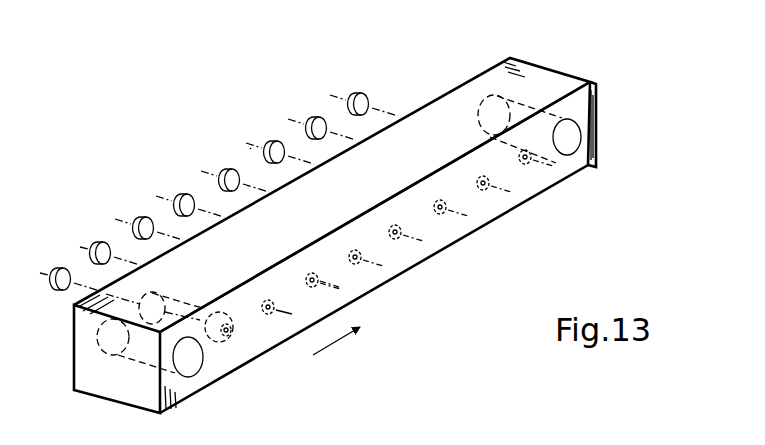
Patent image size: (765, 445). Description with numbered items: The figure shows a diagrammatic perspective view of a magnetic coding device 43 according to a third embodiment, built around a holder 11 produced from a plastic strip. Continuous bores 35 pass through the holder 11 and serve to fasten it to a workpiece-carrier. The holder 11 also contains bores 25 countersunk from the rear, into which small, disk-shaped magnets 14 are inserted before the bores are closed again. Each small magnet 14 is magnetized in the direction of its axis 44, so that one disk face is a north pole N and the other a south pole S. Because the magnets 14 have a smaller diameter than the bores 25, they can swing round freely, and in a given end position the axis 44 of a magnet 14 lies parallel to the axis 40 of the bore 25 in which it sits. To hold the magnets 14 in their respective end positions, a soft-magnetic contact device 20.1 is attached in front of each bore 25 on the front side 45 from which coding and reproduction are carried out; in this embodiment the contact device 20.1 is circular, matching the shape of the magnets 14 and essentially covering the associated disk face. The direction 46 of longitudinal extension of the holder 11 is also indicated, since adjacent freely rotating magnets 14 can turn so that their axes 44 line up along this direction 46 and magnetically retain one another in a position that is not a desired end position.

The holder 11 is at (463, 100).
The small disk-shaped magnet 14 is at (366, 96).
The soft-magnetic contact device 20.1 is at (322, 276).
The bore 25 is at (175, 307).
The continuous bore 35 is at (192, 362).
The bore axis 40 is at (275, 308).
The magnetic coding device 43 is at (275, 105).
The magnet axis 44 is at (250, 147).
The front side 45 is at (495, 205).
The direction of longitudinal extension 46 is at (322, 353).